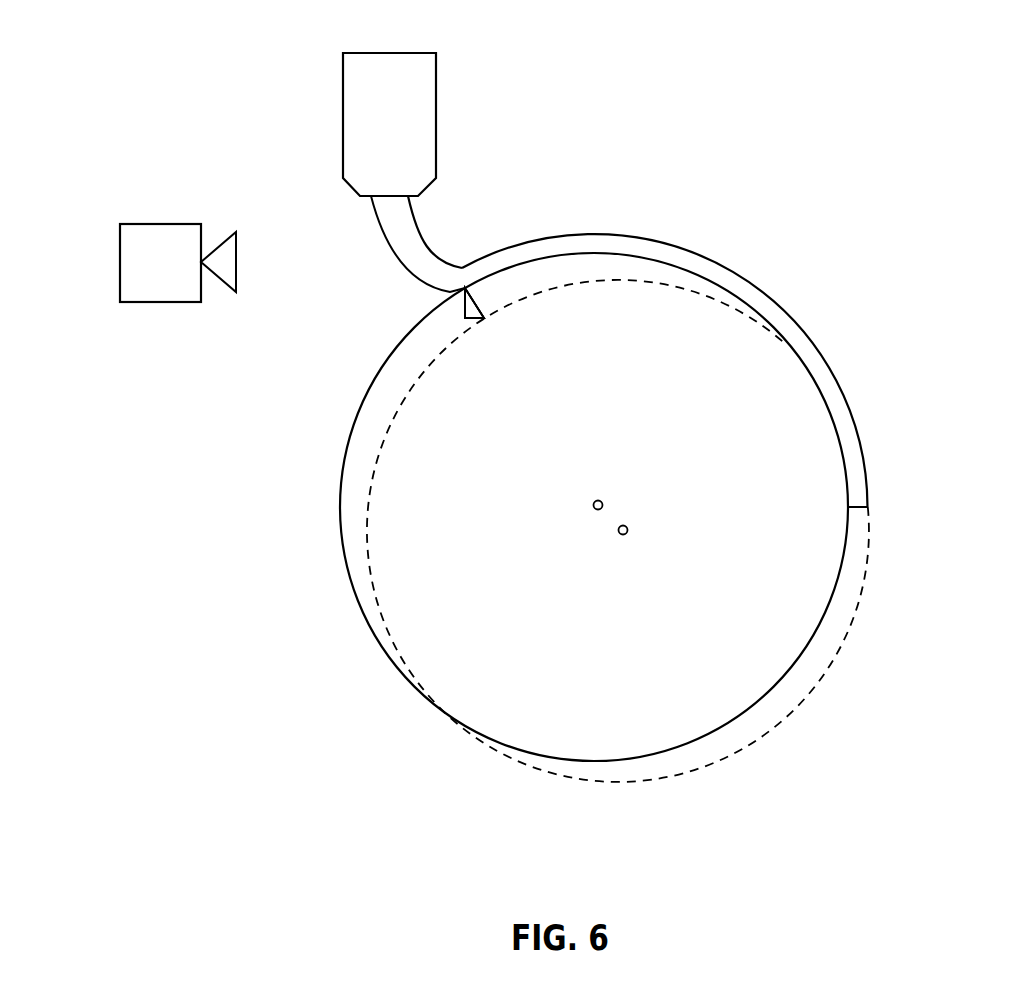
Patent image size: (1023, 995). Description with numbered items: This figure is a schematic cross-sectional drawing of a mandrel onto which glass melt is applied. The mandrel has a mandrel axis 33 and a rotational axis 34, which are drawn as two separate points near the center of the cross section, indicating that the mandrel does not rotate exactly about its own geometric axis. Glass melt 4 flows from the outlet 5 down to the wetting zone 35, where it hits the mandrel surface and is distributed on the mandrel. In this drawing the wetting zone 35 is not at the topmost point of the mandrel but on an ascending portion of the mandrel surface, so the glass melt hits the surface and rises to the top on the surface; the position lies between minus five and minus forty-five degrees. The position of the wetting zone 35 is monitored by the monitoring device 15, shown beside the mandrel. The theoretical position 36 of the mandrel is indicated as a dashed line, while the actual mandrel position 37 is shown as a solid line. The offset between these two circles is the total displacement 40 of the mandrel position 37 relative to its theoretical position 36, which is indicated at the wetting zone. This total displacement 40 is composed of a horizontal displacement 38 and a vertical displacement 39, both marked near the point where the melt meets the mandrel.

The glass melt 4 is at (744, 276).
The outlet 5 is at (414, 176).
The monitoring device 15 is at (152, 203).
The mandrel axis 33 is at (632, 527).
The rotational axis 34 is at (606, 504).
The wetting zone 35 is at (438, 294).
The theoretical position 36 is at (868, 616).
The actual mandrel position 37 is at (348, 568).
The horizontal displacement 38 is at (465, 318).
The vertical displacement 39 is at (465, 303).
The total displacement 40 is at (476, 302).